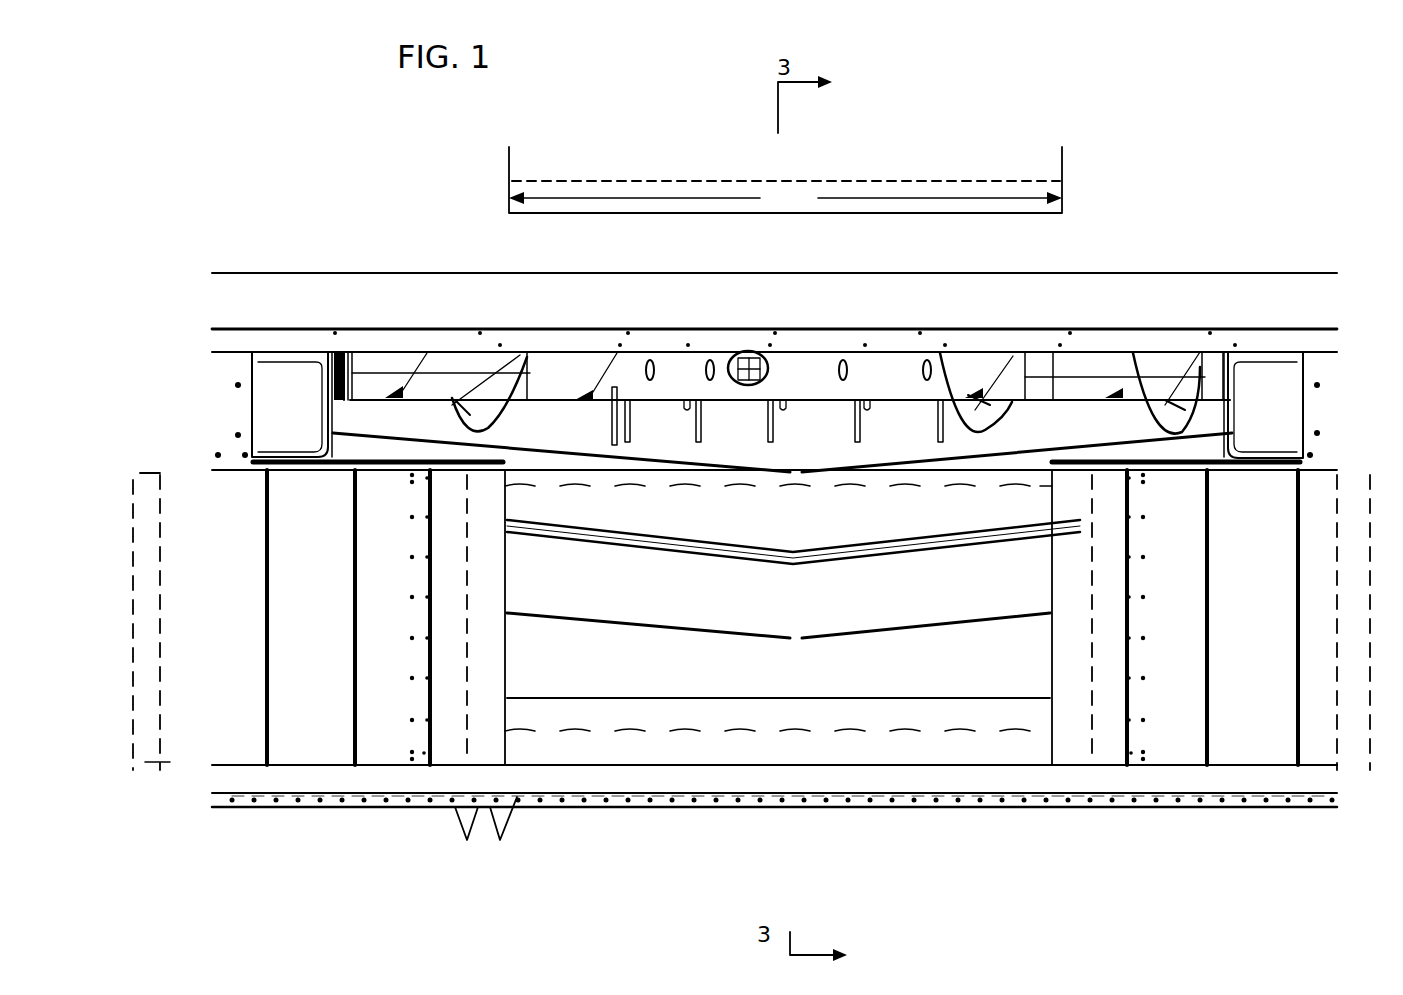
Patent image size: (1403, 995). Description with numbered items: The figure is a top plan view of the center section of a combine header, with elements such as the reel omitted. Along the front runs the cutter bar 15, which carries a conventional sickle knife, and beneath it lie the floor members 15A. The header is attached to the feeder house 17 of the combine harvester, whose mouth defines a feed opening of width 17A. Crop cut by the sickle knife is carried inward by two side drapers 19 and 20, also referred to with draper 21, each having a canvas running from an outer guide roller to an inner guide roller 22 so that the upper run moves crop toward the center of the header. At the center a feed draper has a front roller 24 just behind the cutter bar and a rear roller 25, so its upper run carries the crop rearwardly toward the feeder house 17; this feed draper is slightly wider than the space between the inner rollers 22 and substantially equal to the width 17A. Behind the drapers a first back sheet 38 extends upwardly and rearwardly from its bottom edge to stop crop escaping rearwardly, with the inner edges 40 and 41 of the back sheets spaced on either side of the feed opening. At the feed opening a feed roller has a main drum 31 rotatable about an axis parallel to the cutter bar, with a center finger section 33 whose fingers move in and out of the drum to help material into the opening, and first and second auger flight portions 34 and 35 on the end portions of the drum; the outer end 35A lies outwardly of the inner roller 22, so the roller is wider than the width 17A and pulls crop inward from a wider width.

The cutter bar 15 is at (392, 805).
The floor beams 15A is at (497, 822).
The feeder house 17 is at (1018, 181).
The width of the feed opening 17A is at (785, 150).
The side draper 19 is at (330, 745).
The side draper 20 is at (1193, 745).
The side draper 21 is at (160, 760).
The inner guide roller 22 is at (483, 728).
The front roller 24 is at (776, 740).
The rear roller 25 is at (628, 465).
The main drum 31 is at (905, 358).
The finger section 33 is at (780, 420).
The first auger flight portion 34 is at (478, 415).
The second auger flight portion 35 is at (978, 412).
The outer end of second auger flight portion 35A is at (1180, 400).
The first back sheet 38 is at (232, 372).
The inner edge of first back sheet 40 is at (253, 390).
The inner edge of second back sheet 41 is at (1295, 375).